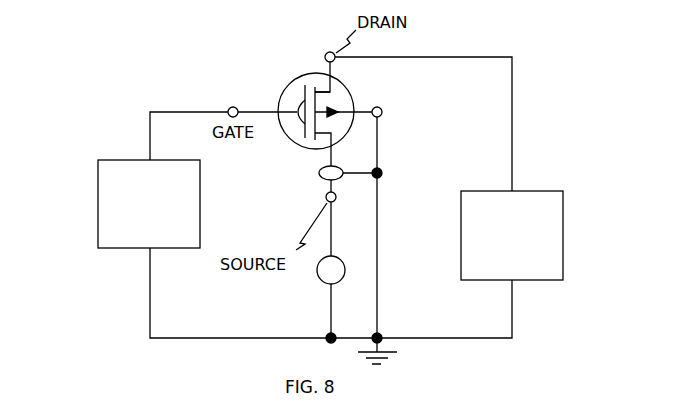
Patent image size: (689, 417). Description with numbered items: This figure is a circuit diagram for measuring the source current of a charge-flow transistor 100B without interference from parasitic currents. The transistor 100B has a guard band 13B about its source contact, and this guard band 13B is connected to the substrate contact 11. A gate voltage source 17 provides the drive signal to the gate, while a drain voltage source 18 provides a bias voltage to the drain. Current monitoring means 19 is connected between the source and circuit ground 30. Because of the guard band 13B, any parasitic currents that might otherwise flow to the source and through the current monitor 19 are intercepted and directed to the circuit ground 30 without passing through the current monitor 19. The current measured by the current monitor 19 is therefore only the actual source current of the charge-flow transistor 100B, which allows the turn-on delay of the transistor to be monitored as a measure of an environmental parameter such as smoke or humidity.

The charge-flow transistor 100B is at (288, 142).
The substrate contact 11 is at (383, 111).
The guard band 13B is at (323, 180).
The current monitoring means 19 is at (320, 279).
The circuit ground 30 is at (397, 354).
The gate voltage source 17 is at (98, 222).
The drain voltage source 18 is at (563, 225).